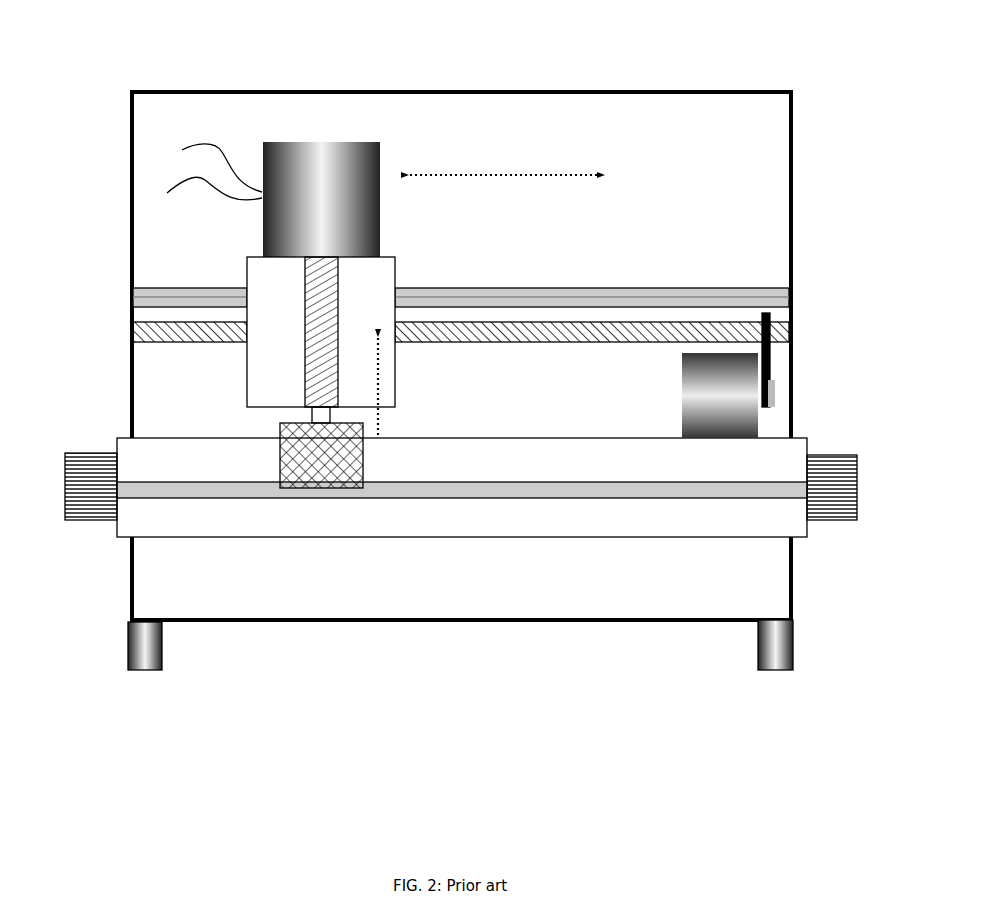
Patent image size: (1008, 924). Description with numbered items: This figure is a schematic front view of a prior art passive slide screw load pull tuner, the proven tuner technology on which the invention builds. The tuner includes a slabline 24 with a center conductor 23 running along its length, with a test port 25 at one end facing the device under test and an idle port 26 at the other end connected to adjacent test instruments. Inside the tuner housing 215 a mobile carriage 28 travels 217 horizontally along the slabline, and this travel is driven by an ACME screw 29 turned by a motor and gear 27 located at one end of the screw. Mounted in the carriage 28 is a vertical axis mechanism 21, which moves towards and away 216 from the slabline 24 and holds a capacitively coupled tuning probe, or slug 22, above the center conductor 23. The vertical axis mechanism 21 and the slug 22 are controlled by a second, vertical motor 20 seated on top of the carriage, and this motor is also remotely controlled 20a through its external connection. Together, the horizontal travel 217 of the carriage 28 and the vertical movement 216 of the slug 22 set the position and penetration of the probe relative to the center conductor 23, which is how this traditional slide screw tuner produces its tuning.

The vertical motor 20 is at (305, 142).
The remote control 20a is at (203, 172).
The vertical axis mechanism 21 is at (305, 367).
The tuning probe (slug) 22 is at (363, 460).
The center conductor 23 is at (240, 488).
The slabline 24 is at (592, 520).
The test port 25 is at (83, 522).
The idle port 26 is at (837, 525).
The motor and gear 27 is at (768, 345).
The mobile carriage 28 is at (245, 272).
The ACME screw 29 is at (675, 323).
The tuner housing 215 is at (690, 577).
The vertical movement 216 is at (338, 363).
The horizontal travel 217 is at (467, 175).